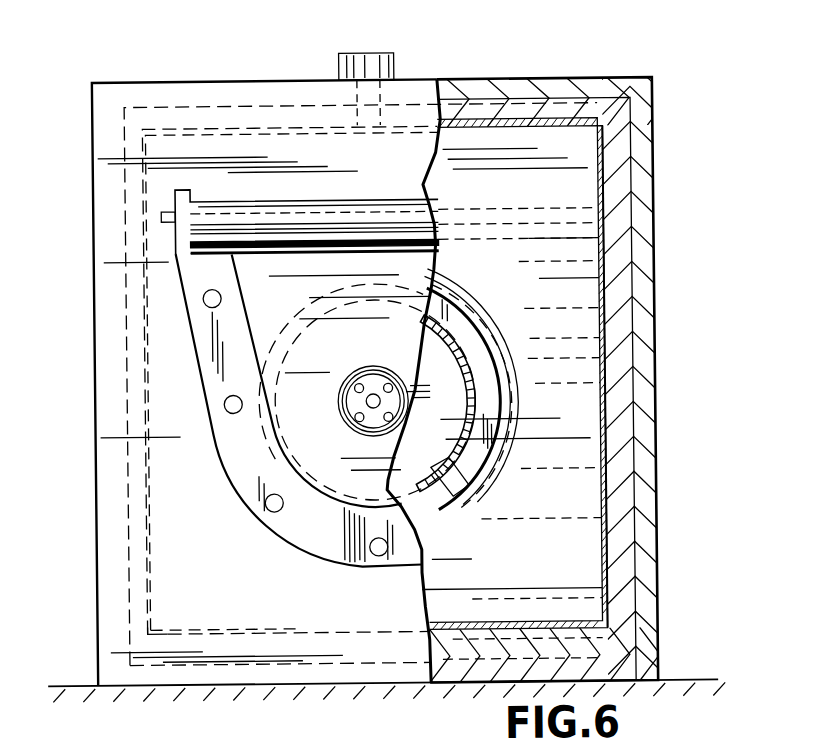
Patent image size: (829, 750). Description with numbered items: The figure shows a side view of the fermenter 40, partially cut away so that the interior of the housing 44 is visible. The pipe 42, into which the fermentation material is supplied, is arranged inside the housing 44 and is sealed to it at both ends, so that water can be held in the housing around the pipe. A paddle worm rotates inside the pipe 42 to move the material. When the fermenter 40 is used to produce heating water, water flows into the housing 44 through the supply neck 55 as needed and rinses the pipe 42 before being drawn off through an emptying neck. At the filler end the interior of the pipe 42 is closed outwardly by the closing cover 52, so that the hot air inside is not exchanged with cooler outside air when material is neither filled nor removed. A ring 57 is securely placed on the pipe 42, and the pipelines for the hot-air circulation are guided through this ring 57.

The heat exchanger housing assembly 40 is at (559, 58).
The housing 44 is at (512, 62).
The supply neck 55 is at (368, 58).
The closing cover 52 is at (192, 232).
The pipe 42 is at (470, 394).
The ring 57 is at (480, 451).